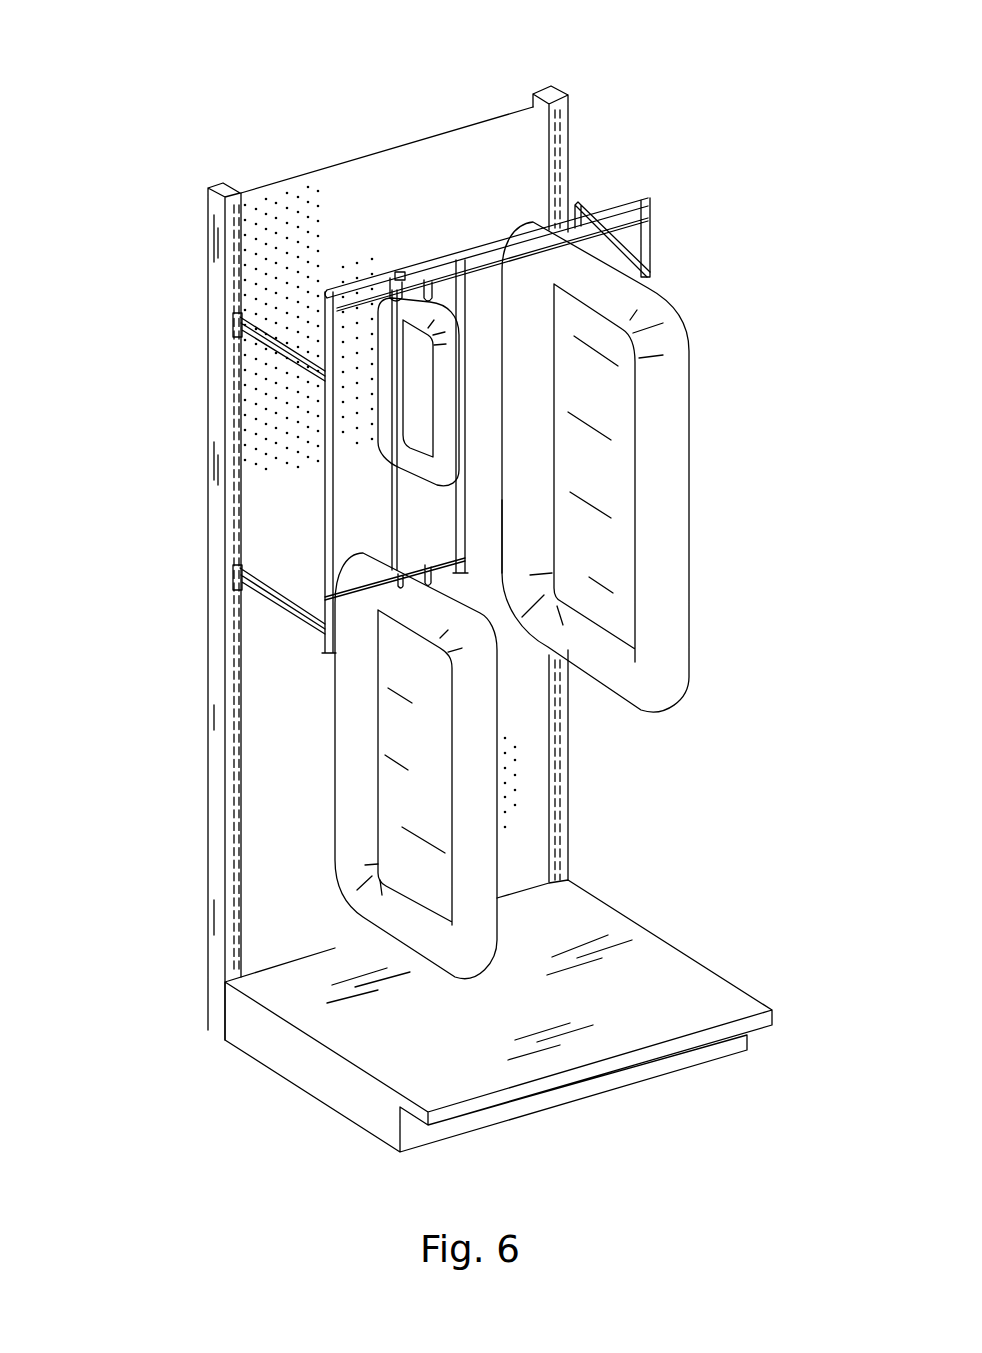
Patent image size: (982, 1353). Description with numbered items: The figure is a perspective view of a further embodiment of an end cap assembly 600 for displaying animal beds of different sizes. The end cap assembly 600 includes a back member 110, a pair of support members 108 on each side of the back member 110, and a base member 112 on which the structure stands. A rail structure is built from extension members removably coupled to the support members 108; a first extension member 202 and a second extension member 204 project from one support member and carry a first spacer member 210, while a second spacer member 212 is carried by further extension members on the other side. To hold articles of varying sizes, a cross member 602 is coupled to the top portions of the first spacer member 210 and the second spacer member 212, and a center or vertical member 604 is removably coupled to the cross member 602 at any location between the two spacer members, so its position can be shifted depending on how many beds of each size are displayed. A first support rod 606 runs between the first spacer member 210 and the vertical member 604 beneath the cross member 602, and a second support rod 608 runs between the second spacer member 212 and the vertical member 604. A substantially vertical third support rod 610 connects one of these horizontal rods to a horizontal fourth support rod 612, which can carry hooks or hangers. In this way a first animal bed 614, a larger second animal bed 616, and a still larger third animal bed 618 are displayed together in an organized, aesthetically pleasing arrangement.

The end cap assembly 600 is at (122, 112).
The support members 108 is at (567, 128).
The back member 110 is at (428, 172).
The base member 112 is at (687, 993).
The first extension member 202 is at (283, 355).
The second extension member 204 is at (272, 600).
The first spacer member 210 is at (327, 488).
The second spacer member 212 is at (650, 232).
The cross member 602 is at (472, 240).
The vertical member 604 is at (467, 502).
The first support rod 606 is at (413, 290).
The second support rod 608 is at (630, 207).
The third support rod 610 is at (390, 517).
The fourth support rod 612 is at (350, 590).
The first animal bed 614 is at (443, 377).
The second animal bed 616 is at (470, 787).
The third animal bed 618 is at (674, 651).